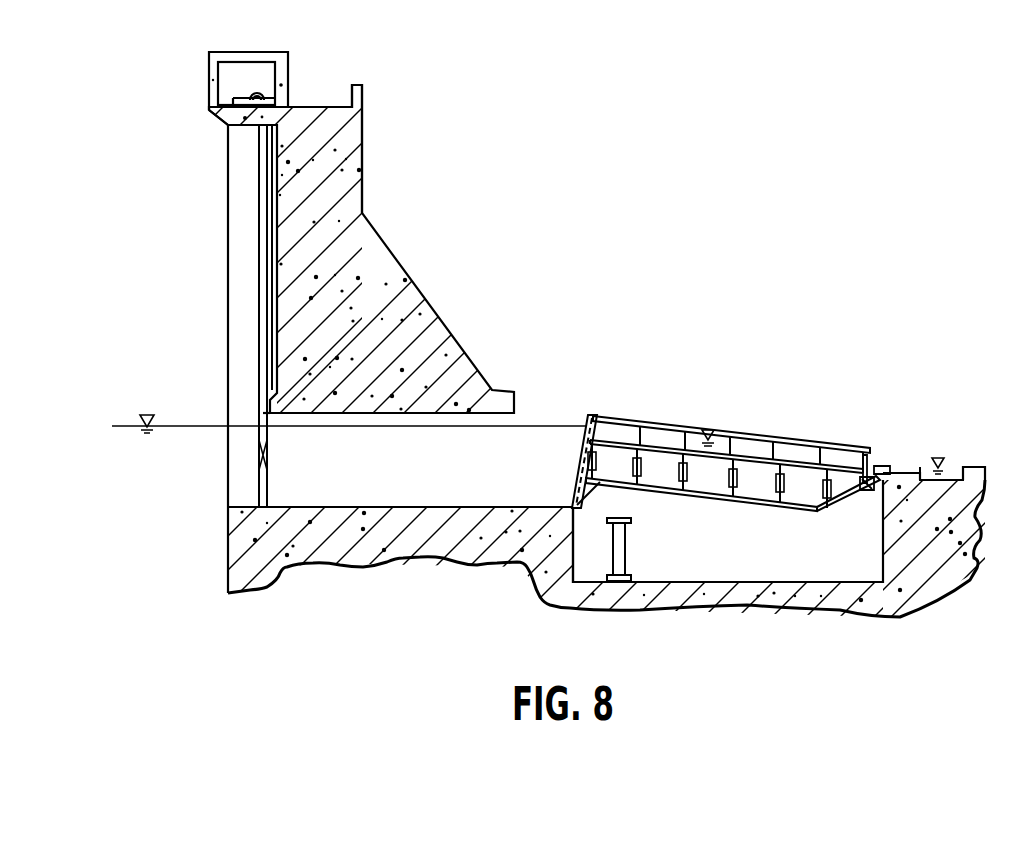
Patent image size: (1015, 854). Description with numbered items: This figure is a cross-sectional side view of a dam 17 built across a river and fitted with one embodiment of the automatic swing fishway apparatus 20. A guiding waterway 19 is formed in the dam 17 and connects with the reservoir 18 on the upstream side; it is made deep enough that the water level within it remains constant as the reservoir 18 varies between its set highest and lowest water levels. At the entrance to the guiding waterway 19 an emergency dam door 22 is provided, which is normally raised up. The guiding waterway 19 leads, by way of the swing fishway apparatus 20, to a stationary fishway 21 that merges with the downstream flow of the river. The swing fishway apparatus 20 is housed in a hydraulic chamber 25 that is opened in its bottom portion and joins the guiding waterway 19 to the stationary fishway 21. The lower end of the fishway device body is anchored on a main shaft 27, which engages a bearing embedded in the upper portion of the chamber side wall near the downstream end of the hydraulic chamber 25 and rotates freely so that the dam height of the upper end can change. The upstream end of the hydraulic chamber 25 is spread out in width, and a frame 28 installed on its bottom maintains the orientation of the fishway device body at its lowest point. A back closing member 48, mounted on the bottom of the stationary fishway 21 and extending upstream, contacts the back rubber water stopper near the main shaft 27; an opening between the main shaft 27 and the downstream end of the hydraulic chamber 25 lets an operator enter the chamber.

The dam 17 is at (361, 334).
The reservoir 18 is at (120, 448).
The guiding waterway 19 is at (448, 508).
The swing fishway apparatus 20 is at (768, 436).
The stationary fishway 21 is at (977, 473).
The emergency dam door 22 is at (258, 476).
The hydraulic chamber 25 is at (757, 558).
The main shaft 27 is at (882, 467).
The frame 28 is at (626, 540).
The back closing member 48 is at (875, 500).